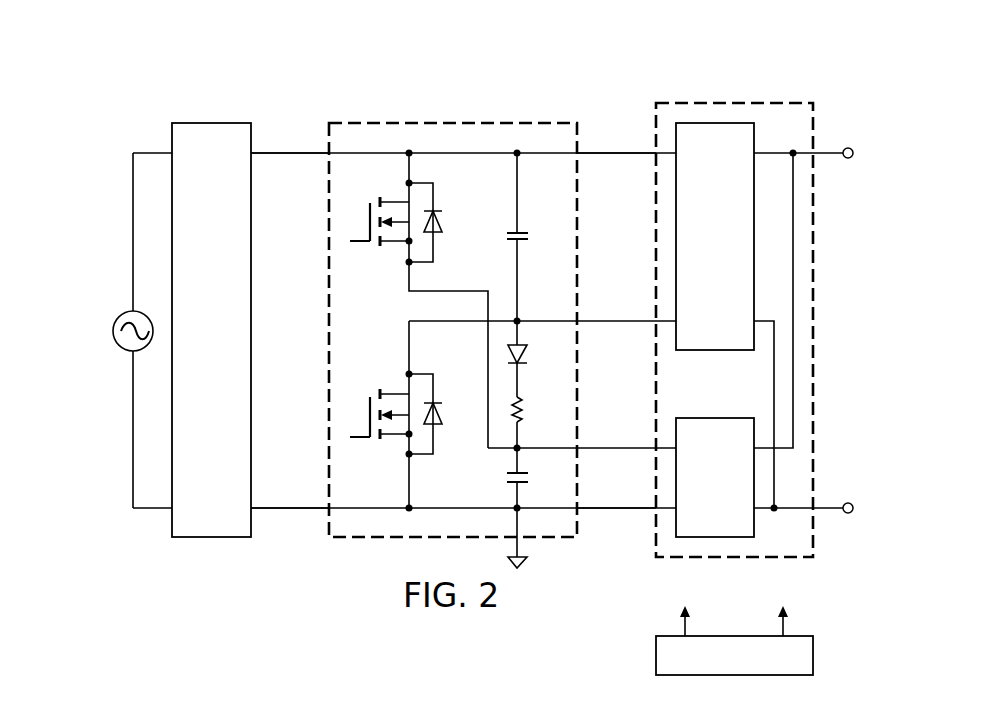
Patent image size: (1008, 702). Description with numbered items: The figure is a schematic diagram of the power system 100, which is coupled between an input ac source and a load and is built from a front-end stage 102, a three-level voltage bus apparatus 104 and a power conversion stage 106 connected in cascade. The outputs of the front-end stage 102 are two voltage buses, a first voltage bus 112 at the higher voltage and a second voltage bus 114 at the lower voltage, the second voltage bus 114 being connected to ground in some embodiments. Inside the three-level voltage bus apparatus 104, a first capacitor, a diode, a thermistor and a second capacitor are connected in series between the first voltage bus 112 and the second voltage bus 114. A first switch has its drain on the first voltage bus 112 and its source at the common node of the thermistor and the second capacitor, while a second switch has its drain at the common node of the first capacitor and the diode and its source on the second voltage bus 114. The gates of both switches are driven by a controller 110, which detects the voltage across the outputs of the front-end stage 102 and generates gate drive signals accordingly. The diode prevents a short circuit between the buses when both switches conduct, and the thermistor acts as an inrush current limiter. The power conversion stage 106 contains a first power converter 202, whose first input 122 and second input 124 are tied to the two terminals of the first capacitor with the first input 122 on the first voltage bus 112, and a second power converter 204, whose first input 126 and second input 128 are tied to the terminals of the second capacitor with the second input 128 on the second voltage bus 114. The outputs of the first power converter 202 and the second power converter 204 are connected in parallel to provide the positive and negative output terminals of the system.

The power system 100 is at (362, 74).
The front-end stage 102 is at (193, 343).
The three-level voltage bus apparatus 104 is at (452, 123).
The power conversion stage 106 is at (737, 103).
The controller 110 is at (813, 655).
The first voltage bus 112 is at (290, 151).
The second voltage bus 114 is at (290, 510).
The first input 122 is at (618, 151).
The second input 124 is at (617, 319).
The first input 126 is at (617, 446).
The second input 128 is at (617, 510).
The first power converter 202 is at (697, 246).
The second power converter 204 is at (697, 486).